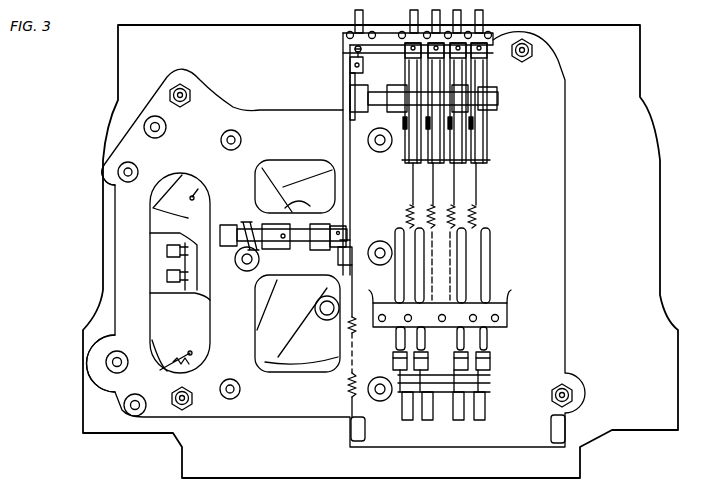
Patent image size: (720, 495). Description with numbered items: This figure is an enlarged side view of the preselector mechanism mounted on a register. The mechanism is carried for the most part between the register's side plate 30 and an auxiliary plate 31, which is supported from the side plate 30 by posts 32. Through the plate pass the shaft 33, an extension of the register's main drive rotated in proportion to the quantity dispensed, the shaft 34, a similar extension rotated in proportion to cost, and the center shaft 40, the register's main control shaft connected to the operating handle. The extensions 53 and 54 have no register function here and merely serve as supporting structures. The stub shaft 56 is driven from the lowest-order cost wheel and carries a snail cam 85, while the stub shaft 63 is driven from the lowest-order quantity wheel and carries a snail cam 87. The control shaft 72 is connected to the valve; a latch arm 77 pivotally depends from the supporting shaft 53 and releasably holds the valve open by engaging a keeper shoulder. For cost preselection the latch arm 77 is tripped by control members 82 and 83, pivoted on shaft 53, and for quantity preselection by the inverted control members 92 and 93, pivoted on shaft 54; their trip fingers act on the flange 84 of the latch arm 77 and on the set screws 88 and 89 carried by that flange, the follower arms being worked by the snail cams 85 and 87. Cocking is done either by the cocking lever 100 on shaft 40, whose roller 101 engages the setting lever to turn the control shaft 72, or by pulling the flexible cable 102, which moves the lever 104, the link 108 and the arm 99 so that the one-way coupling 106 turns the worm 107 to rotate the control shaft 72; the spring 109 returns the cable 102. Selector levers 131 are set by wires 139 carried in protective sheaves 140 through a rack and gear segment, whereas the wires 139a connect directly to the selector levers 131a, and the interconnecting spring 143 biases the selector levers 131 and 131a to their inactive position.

The side plate 30 is at (118, 59).
The auxiliary plate 31 is at (125, 420).
The posts 32 is at (181, 84).
The shaft 33 is at (380, 147).
The shaft 34 is at (381, 398).
The center shaft 40 is at (380, 247).
The extension 53 is at (232, 130).
The extension 54 is at (228, 400).
The stub shaft 56 is at (117, 167).
The stub shaft 63 is at (112, 366).
The control shaft 72 is at (243, 264).
The latch arm 77 is at (160, 236).
The control member 82 is at (267, 165).
The control member 83 is at (298, 170).
The flange 84 is at (175, 293).
The snail cam 85 is at (106, 180).
The snail cam 87 is at (93, 362).
The set screw 88 is at (167, 251).
The set screw 89 is at (167, 274).
The control member 92 is at (261, 323).
The control member 93 is at (297, 370).
The arm 99 is at (339, 256).
The cocking lever 100 is at (320, 299).
The roller 101 is at (302, 322).
The flexible cable 102 is at (354, 50).
The lever 104 is at (350, 76).
The coupling 106 is at (277, 249).
The worm 107 is at (246, 228).
The link 108 is at (347, 207).
The spring 109 is at (356, 336).
The selector levers 131 is at (478, 137).
The selector levers 131a is at (488, 370).
The wires 139 is at (500, 52).
The wires 139a is at (488, 352).
The protective sheaves 140 is at (484, 17).
The interconnecting spring 143 is at (477, 212).